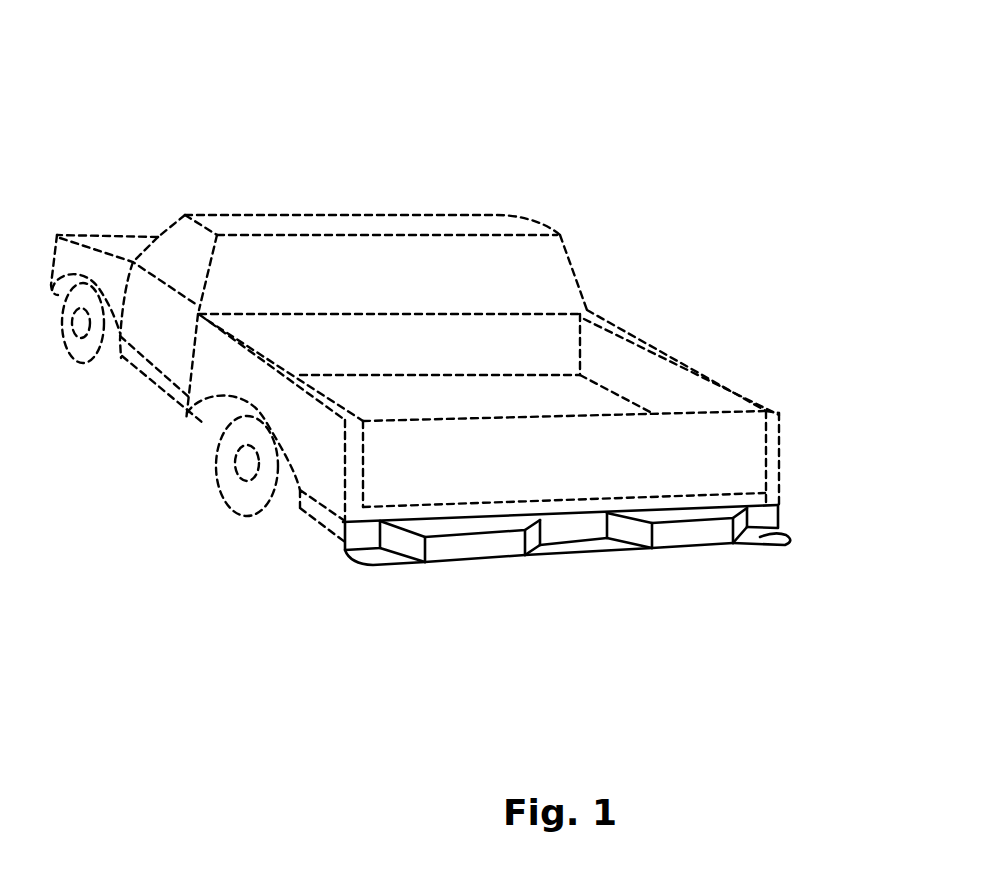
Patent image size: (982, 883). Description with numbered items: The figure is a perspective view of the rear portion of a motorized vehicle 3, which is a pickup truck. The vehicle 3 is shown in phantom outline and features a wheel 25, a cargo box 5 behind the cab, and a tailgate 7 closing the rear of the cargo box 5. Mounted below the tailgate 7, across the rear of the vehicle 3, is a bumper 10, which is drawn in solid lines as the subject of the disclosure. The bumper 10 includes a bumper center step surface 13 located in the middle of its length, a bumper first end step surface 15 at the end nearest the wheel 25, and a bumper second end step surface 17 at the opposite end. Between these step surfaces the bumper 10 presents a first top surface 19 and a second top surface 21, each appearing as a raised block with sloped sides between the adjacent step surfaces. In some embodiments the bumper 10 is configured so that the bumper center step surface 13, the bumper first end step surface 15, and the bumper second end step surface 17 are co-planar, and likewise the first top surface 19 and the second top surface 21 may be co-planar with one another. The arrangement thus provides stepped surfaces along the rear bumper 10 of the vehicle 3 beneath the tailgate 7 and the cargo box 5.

The motorized vehicle 3 is at (346, 146).
The cargo box 5 is at (557, 397).
The tailgate 7 is at (730, 452).
The bumper 10 is at (531, 609).
The bumper center step surface 13 is at (593, 543).
The bumper first end step surface 15 is at (373, 558).
The bumper second end step surface 17 is at (783, 533).
The first top surface 19 is at (492, 525).
The second top surface 21 is at (688, 512).
The wheel 25 is at (240, 495).